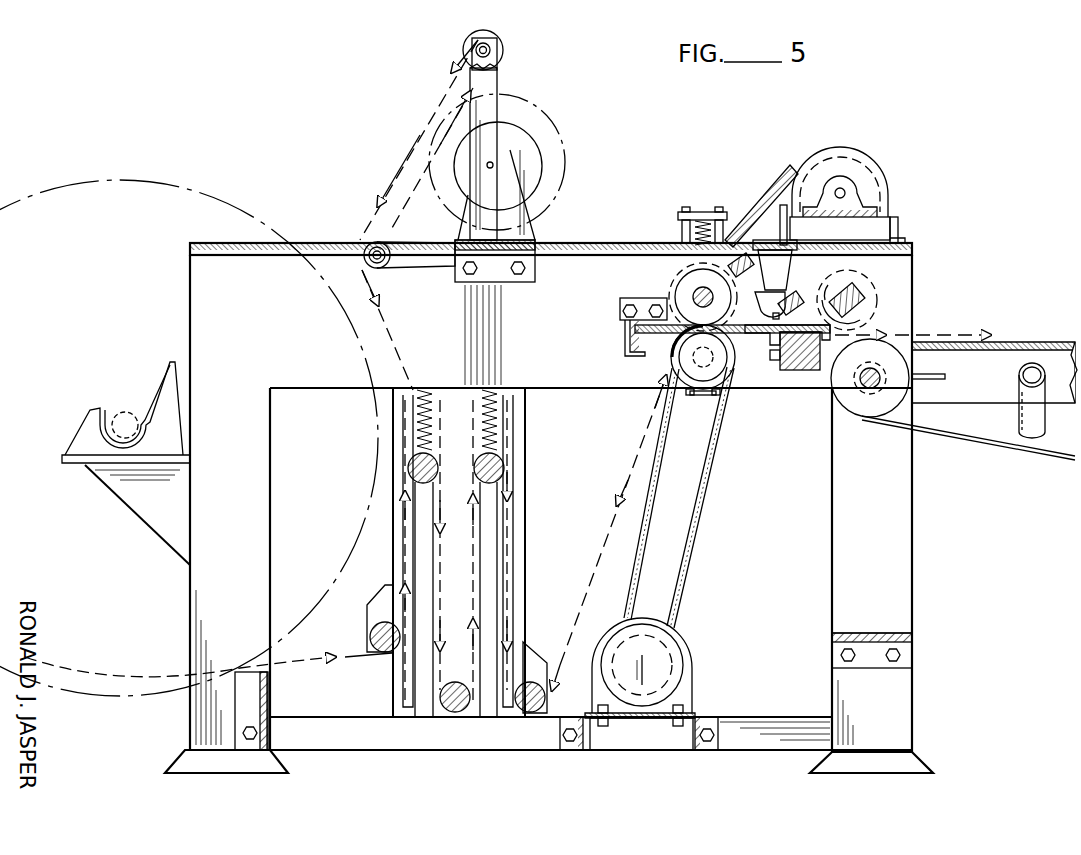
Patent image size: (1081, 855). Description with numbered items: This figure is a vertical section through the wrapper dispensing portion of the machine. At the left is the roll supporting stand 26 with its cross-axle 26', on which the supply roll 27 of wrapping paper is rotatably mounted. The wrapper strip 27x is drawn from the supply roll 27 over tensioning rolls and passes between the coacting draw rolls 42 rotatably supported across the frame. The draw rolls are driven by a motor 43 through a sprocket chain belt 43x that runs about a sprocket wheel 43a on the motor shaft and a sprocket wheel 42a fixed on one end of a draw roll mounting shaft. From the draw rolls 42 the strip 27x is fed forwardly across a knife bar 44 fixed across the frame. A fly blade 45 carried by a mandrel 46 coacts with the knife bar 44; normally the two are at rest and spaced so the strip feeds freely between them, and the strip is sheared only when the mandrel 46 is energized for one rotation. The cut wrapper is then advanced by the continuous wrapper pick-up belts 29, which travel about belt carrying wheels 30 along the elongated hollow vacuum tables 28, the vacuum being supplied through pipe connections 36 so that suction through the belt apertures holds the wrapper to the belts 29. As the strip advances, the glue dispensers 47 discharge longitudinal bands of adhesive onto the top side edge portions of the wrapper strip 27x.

The roll supporting stand 26 is at (136, 448).
The cross-axle 26' is at (117, 403).
The supply roll 27 is at (245, 212).
The wrapper strip 27x is at (922, 338).
The vacuum table 28 is at (1020, 357).
The wrapper pick-up belt 29 is at (1013, 342).
The belt carrying wheel 30 is at (883, 402).
The pipe connection 36 is at (1018, 420).
The draw roll 42 is at (680, 290).
The sprocket wheel 42a is at (695, 396).
The motor 43 is at (676, 672).
The sprocket wheel 43a is at (662, 648).
The sprocket chain belt 43x is at (698, 561).
The knife bar 44 is at (812, 350).
The fly blade 45 is at (838, 280).
The mandrel 46 is at (870, 300).
The glue dispenser 47 is at (798, 315).